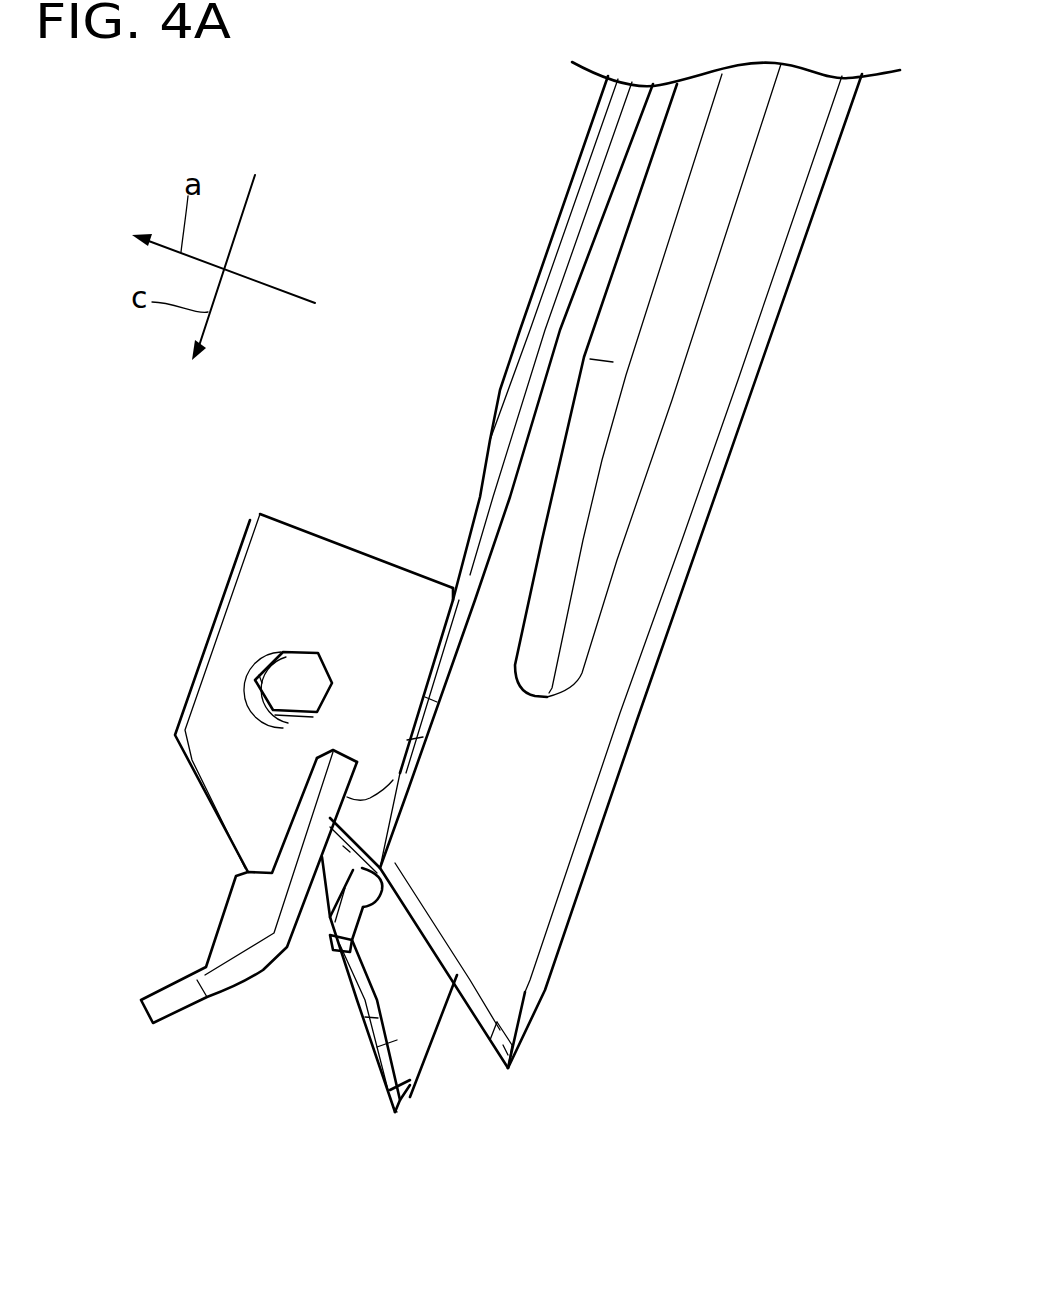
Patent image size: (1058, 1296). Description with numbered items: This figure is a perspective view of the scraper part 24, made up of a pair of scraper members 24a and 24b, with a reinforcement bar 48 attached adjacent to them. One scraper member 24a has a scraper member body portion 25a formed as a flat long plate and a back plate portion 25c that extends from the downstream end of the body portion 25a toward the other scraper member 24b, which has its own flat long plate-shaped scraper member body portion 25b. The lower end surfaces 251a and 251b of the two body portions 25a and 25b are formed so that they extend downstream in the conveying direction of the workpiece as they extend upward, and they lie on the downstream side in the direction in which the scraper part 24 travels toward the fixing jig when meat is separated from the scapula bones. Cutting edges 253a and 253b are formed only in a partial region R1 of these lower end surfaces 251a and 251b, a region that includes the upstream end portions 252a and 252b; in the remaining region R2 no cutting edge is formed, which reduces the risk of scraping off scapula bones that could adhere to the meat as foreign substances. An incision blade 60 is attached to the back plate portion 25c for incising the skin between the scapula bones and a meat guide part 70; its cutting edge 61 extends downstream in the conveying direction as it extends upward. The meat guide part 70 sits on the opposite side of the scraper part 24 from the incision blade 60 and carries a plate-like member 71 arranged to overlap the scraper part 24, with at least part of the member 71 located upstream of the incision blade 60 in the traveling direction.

The scraper part 24 is at (534, 648).
The scraper member 24a is at (462, 503).
The scraper member 24b is at (672, 700).
The scraper member body portion 25a is at (407, 947).
The scraper member body portion 25b is at (570, 792).
The back plate portion 25c is at (487, 477).
The reinforcement bar 48 is at (580, 173).
The incision blade 60 is at (382, 820).
The cutting edge 61 is at (348, 846).
The meat guide part 70 is at (210, 892).
The plate-like member 71 is at (248, 906).
The lower end surface 251a is at (378, 1016).
The lower end surface 251b is at (457, 968).
The end portion 252a is at (409, 1097).
The end portion 252b is at (509, 1072).
The cutting edge 253a is at (395, 1106).
The cutting edge 253b is at (510, 1045).
The partial region R1 is at (497, 1030).
The region R2 is at (382, 1043).